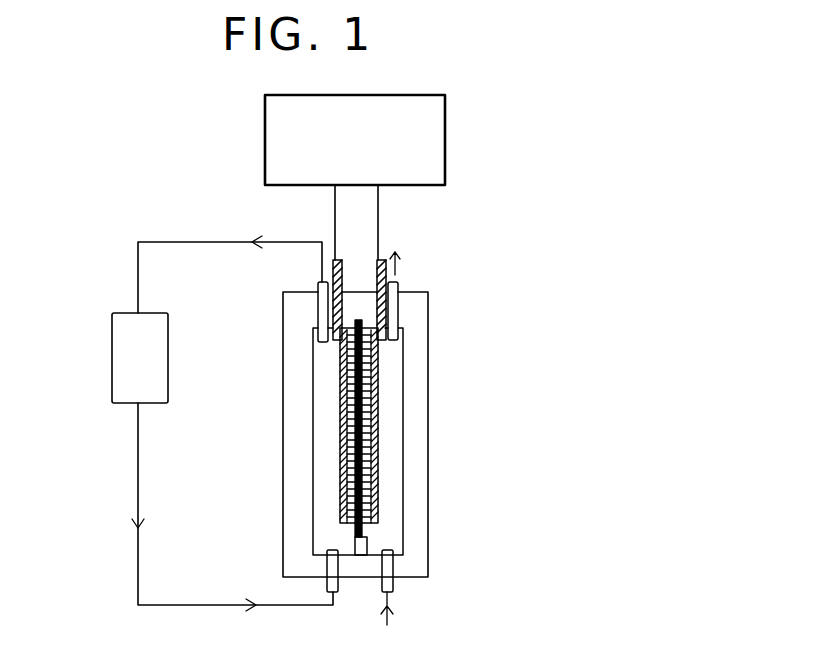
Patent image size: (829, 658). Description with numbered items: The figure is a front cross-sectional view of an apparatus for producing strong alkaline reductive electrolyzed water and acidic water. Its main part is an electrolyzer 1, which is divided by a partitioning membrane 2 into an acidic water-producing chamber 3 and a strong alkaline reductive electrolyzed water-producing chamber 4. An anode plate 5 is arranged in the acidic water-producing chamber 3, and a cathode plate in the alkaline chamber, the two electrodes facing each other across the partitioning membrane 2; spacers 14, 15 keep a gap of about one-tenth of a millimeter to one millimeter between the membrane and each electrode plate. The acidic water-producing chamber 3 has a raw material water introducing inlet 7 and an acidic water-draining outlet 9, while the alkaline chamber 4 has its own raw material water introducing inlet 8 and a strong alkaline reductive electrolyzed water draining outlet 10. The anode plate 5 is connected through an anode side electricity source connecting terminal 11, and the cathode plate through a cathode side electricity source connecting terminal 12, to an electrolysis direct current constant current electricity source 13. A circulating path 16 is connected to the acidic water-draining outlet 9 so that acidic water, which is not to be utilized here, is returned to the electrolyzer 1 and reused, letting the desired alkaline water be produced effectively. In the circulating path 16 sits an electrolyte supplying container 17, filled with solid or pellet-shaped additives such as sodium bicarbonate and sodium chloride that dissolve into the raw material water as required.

The electrolyzer 1 is at (428, 350).
The partitioning membrane 2 is at (370, 530).
The acidic water-producing chamber 3 is at (327, 472).
The strong alkaline reductive electrolyzed water-producing chamber 4 is at (393, 428).
The anode plate 5 is at (373, 503).
The raw material water introducing inlet 7 is at (332, 580).
The raw material water introducing inlet 8 is at (390, 585).
The acidic water-draining outlet 9 is at (323, 312).
The strong alkaline reductive electrolyzed water draining outlet 10 is at (392, 282).
The anode side electricity source connecting terminal 11 is at (340, 264).
The cathode side electricity source connecting terminal 12 is at (379, 264).
The electrolysis direct current constant current electricity source 13 is at (430, 129).
The spacer 14 is at (383, 345).
The spacer 15 is at (380, 398).
The circulating path 16 is at (145, 209).
The electrolyte supplying container 17 is at (125, 348).